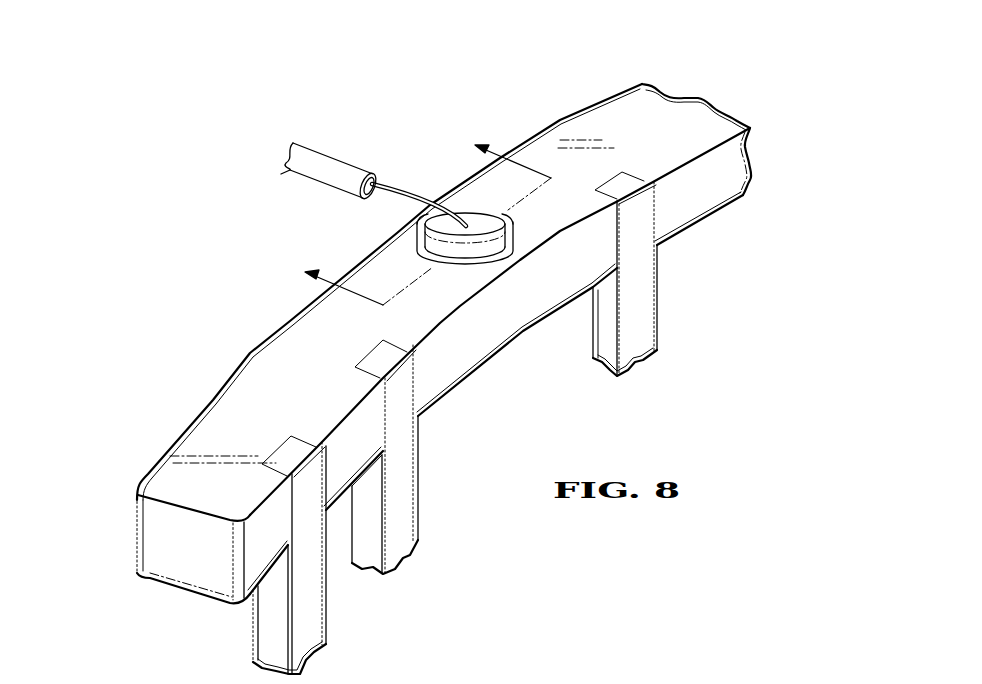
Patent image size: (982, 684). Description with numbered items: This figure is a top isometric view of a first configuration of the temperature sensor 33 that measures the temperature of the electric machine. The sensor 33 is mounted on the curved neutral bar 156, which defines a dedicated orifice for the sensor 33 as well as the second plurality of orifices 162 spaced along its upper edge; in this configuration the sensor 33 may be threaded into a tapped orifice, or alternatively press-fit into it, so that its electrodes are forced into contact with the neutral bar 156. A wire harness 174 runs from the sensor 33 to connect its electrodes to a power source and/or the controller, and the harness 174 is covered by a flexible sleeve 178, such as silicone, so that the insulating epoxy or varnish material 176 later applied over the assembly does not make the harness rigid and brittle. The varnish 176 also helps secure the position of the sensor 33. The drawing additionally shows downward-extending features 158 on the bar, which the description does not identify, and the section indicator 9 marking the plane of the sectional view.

The neutral bar 156 is at (213, 401).
The legs 158 is at (657, 333).
The second plurality of orifices 162 is at (272, 444).
The wire harness 174 is at (413, 203).
The insulating epoxy or varnish material 176 is at (700, 98).
The sleeve 178 is at (330, 153).
The temperature sensor 33 is at (476, 264).
The section line 9- 9 is at (419, 217).